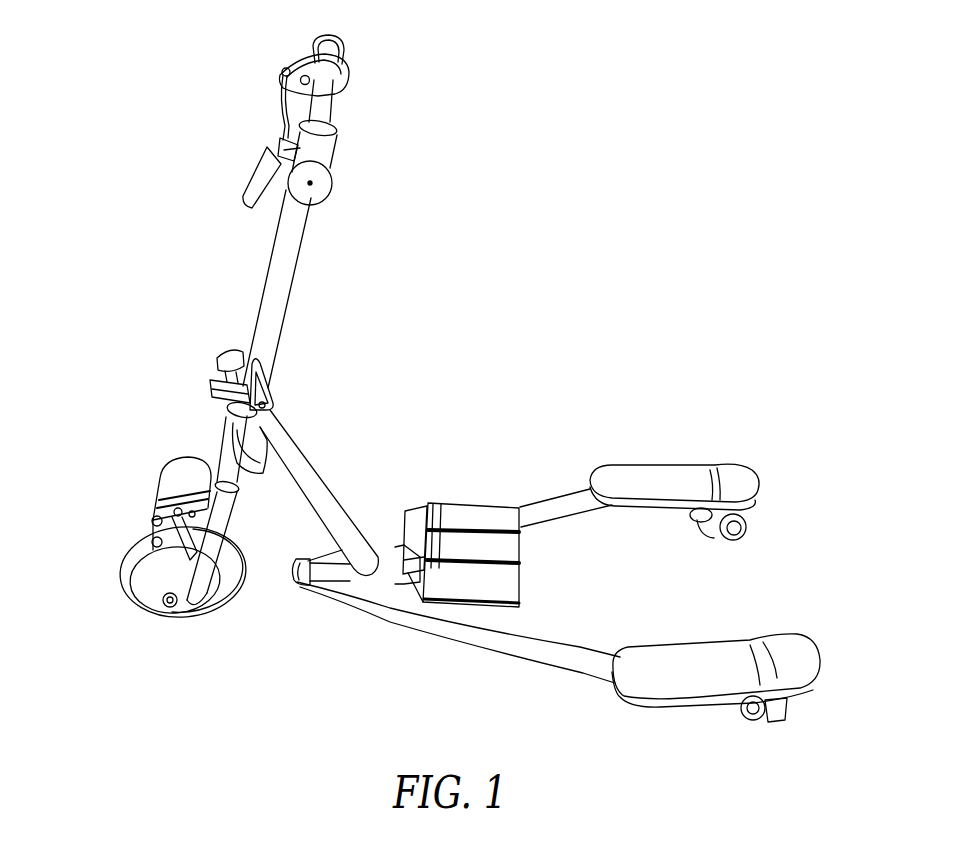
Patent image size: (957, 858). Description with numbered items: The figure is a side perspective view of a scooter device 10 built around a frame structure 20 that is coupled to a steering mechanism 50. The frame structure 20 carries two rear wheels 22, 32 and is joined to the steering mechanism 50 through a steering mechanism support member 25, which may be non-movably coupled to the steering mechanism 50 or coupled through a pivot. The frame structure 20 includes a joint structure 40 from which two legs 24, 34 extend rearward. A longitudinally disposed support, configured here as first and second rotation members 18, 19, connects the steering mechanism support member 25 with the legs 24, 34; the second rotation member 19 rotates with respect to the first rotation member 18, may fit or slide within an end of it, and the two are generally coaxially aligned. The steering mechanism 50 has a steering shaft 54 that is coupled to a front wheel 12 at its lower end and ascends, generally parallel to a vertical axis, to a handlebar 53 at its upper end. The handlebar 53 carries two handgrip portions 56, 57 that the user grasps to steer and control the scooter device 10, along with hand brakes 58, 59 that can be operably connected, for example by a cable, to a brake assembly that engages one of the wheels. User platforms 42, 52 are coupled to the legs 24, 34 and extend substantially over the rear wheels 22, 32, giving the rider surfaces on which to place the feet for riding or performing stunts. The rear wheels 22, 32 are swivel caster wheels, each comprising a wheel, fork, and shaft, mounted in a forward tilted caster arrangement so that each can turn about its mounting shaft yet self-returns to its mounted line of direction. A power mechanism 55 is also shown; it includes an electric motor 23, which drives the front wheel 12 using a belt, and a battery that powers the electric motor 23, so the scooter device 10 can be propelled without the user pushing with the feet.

The scooter device 10 is at (459, 391).
The front wheel 12 is at (130, 550).
The first rotation member 18 is at (307, 562).
The second rotation member 19 is at (393, 572).
The frame structure 20 is at (567, 564).
The rear wheel 22 is at (746, 522).
The electric motor 23 is at (180, 480).
The leg 24 is at (549, 514).
The steering mechanism support member 25 is at (317, 498).
The rear wheel 32 is at (770, 712).
The leg 34 is at (528, 645).
The joint structure 40 is at (164, 545).
The user platform 42 is at (737, 470).
The steering mechanism 50 is at (299, 258).
The user platform 52 is at (797, 653).
The handlebar 53 is at (331, 102).
The steering shaft 54 is at (283, 290).
The power mechanism 55 is at (465, 520).
The handgrip portion 56 is at (344, 48).
The handgrip portion 57 is at (327, 158).
The hand brake 58 is at (284, 70).
The hand brake 59 is at (266, 165).